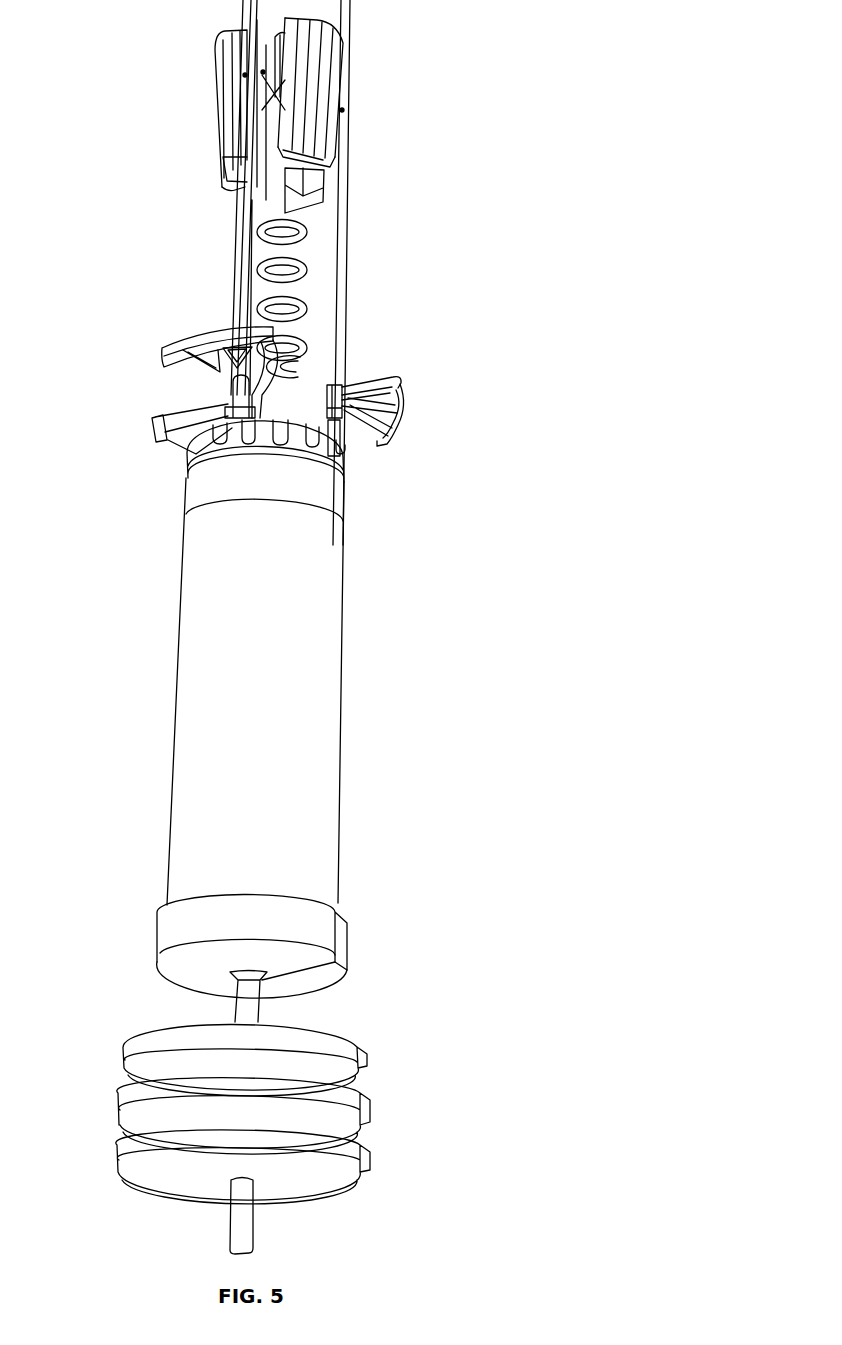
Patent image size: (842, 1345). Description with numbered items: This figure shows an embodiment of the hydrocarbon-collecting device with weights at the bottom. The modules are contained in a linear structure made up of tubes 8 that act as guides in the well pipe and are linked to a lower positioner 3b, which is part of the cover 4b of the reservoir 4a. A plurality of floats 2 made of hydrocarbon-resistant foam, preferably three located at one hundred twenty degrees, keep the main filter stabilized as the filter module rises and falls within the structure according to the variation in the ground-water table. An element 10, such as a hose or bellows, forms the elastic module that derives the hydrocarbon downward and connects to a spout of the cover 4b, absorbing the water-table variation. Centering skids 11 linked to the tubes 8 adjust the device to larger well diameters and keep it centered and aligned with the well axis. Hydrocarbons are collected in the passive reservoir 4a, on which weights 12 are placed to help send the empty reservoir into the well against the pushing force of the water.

The floats 2 is at (237, 93).
The tubes 8 is at (345, 255).
The element 10 is at (255, 291).
The lower positioner 3b is at (182, 404).
The centering skids 11 is at (405, 409).
The cover 4b is at (338, 452).
The reservoir 4a is at (318, 706).
The weights 12 is at (348, 1100).